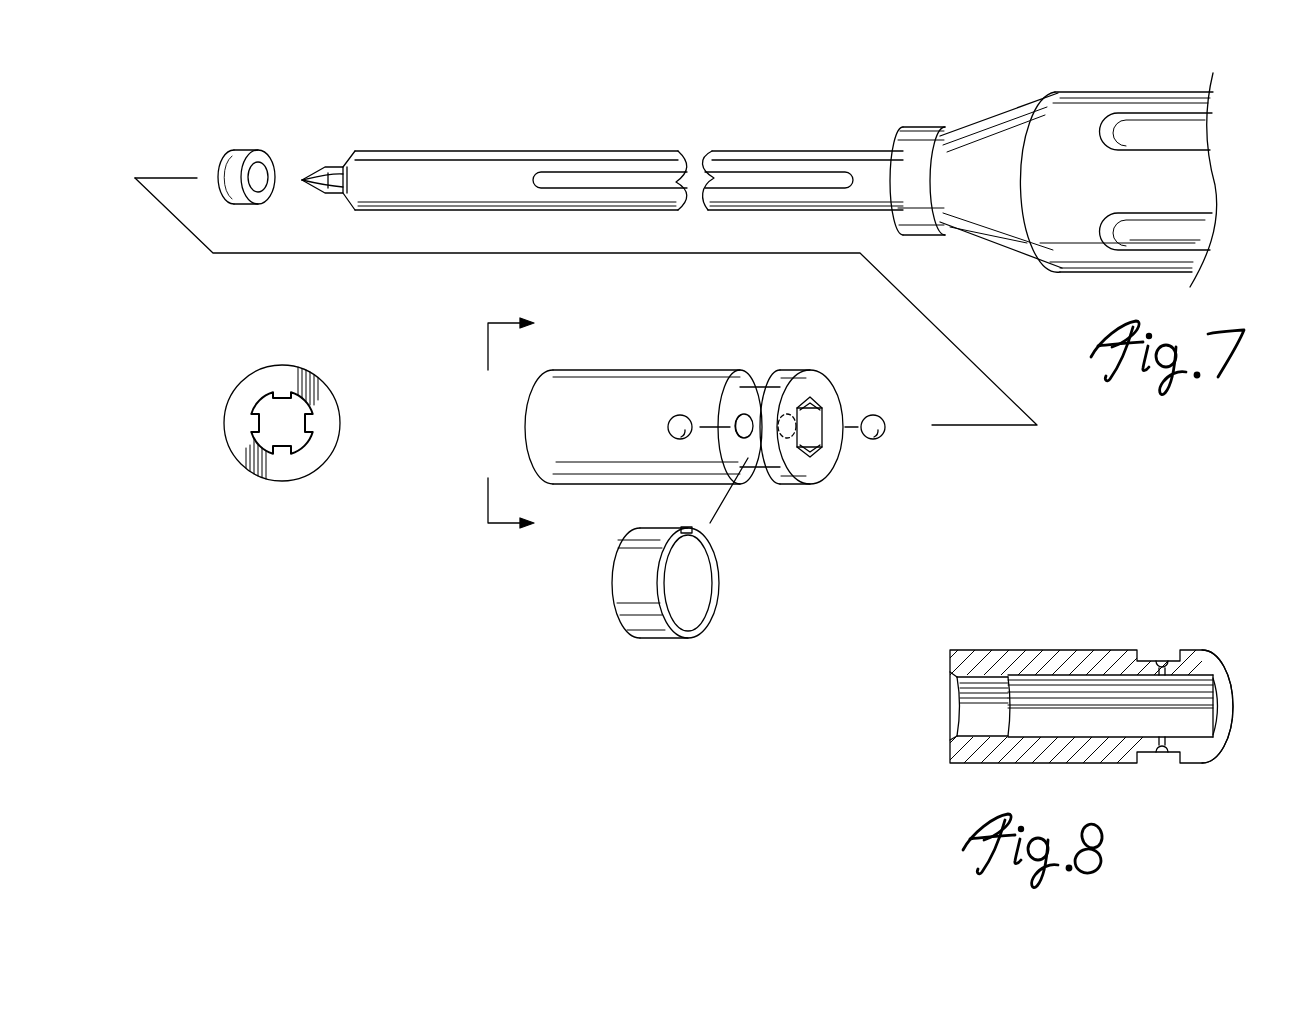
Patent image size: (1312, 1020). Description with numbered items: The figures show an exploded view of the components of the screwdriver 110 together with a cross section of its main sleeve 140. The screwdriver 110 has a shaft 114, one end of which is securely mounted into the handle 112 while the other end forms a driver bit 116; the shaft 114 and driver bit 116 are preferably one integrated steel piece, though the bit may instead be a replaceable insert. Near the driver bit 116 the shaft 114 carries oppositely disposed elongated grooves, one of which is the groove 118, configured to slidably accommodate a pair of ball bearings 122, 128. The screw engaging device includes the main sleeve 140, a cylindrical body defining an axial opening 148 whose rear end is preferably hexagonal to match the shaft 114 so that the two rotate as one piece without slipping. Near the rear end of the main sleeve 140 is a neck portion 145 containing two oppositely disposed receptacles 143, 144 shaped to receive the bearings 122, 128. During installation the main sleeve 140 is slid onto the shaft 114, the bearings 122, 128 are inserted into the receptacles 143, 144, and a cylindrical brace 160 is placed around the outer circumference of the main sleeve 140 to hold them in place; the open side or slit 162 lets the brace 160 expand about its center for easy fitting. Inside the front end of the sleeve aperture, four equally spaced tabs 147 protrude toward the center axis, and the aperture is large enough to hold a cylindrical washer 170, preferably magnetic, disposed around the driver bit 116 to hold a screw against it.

In FIG. 7, the screwdriver 110 is at (651, 108).
In FIG. 7, the handle 112 is at (1085, 100).
In FIG. 7, the shaft 114 is at (785, 150).
In FIG. 7, the driver bit 116 is at (323, 162).
In FIG. 7, the elongated groove 118 is at (558, 176).
In FIG. 7, the bearing 122 is at (680, 414).
In FIG. 7, the bearing 128 is at (872, 440).
In FIG. 7, the main sleeve 140 is at (554, 497).
In FIG. 8, the main sleeve 140 is at (1073, 626).
In FIG. 7, the receptacle 143 is at (745, 414).
In FIG. 8, the receptacle 143 is at (1162, 664).
In FIG. 7, the receptacle 144 is at (792, 412).
In FIG. 8, the receptacle 144 is at (1163, 748).
In FIG. 7, the neck portion 145 is at (757, 473).
In FIG. 7, the tab 147 is at (312, 421).
In FIG. 8, the tab 147 is at (968, 707).
In FIG. 8, the axial opening 148 is at (1206, 695).
In FIG. 7, the cylindrical brace 160 is at (718, 603).
In FIG. 7, the slit 162 is at (686, 527).
In FIG. 7, the cylindrical washer 170 is at (249, 147).